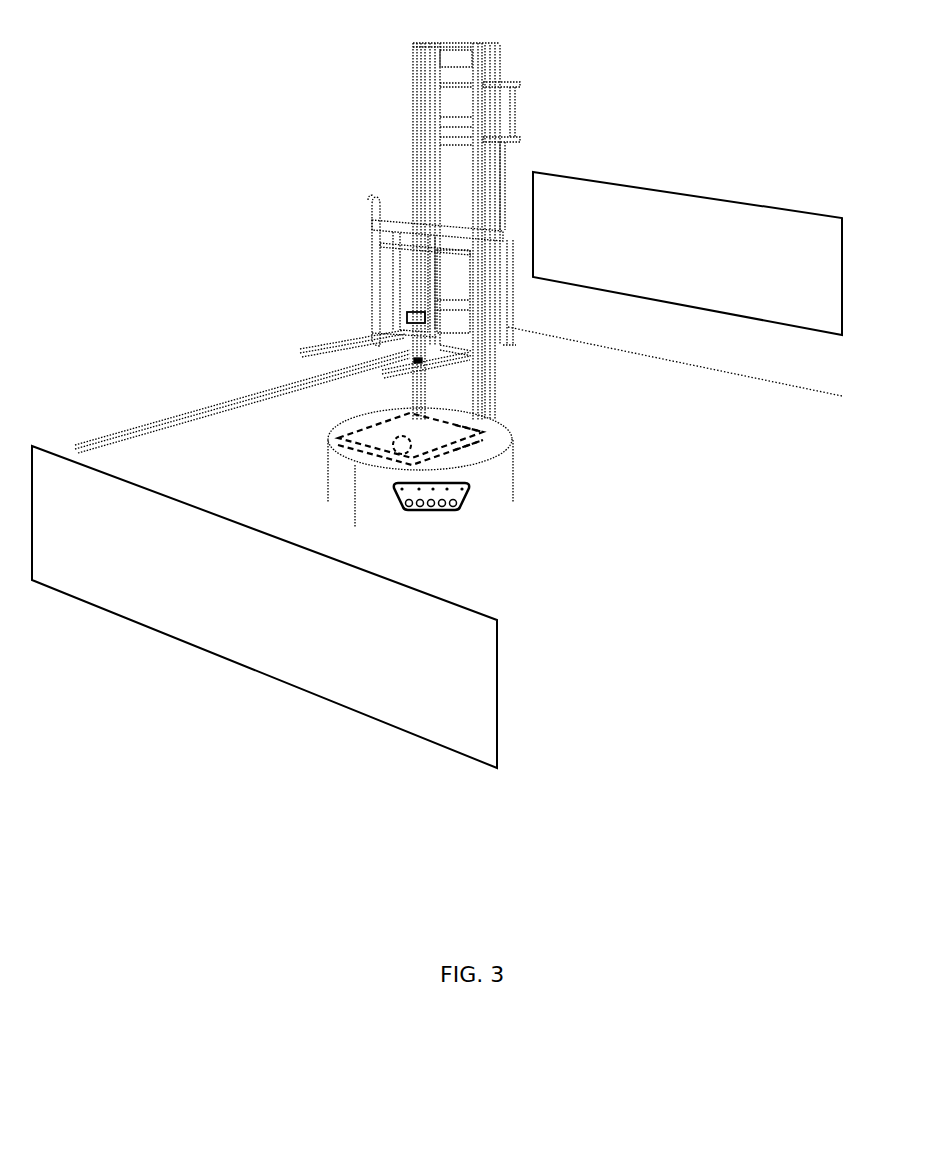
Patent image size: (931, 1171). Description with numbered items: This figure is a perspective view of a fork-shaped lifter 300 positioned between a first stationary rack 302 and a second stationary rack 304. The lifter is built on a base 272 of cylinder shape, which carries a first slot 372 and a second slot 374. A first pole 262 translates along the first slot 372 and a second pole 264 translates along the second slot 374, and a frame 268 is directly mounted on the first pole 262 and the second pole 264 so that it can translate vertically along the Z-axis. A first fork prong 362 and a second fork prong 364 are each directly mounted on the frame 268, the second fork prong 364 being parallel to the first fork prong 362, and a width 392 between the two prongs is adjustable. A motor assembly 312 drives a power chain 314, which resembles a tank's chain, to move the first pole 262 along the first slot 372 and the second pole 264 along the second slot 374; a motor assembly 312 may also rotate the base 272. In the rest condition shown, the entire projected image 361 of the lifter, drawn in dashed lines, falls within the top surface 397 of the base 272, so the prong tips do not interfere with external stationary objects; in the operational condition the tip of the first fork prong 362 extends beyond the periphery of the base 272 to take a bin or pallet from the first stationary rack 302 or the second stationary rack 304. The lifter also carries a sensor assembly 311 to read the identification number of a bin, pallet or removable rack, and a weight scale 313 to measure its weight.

The fork-shaped lifter 300 is at (178, 78).
The first stationary rack 302 is at (258, 612).
The second stationary rack 304 is at (692, 263).
The first pole 262 is at (487, 395).
The second pole 264 is at (423, 405).
The frame 268 is at (367, 272).
The base 272 is at (487, 480).
The sensor assembly 311 is at (407, 316).
The motor assembly 312 is at (395, 452).
The weight scale 313 is at (422, 362).
The power chain 314 is at (442, 513).
The projected image 361 is at (469, 421).
The first fork prong 362 is at (452, 355).
The second fork prong 364 is at (340, 344).
The first slot 372 is at (465, 447).
The second slot 374 is at (372, 436).
The width 392 is at (400, 367).
The top surface 397 is at (487, 448).